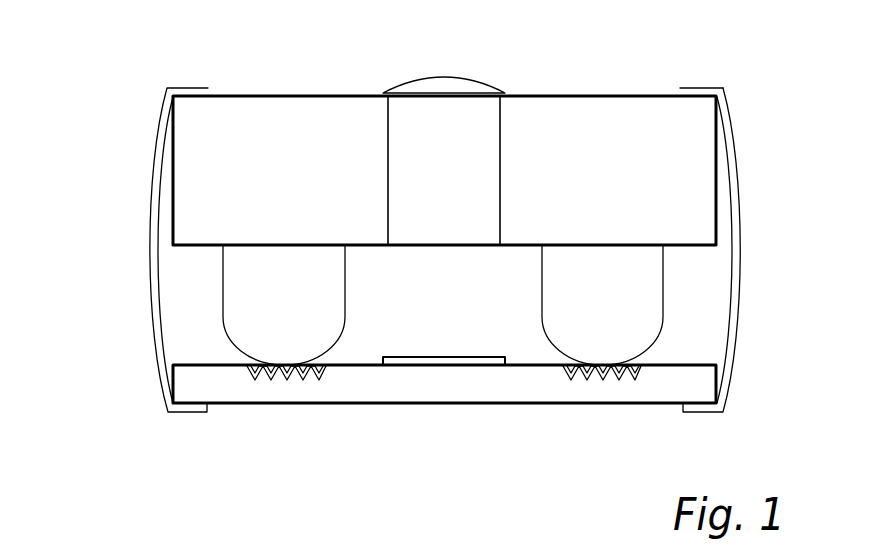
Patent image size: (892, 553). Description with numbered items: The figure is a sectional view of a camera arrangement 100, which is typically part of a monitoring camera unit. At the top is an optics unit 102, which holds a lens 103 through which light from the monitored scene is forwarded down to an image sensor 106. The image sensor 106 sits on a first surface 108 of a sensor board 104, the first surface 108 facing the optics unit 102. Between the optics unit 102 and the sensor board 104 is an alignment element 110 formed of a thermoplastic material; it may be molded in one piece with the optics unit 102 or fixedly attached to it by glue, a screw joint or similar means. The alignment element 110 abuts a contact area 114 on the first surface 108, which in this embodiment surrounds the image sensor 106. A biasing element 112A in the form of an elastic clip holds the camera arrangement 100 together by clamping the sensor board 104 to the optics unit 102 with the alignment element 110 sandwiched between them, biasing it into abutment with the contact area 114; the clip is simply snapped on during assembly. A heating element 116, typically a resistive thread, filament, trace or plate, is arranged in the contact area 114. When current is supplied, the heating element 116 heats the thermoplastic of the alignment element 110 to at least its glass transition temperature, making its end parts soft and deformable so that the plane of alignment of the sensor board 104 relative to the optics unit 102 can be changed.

The camera arrangement 100 is at (141, 106).
The optics unit 102 is at (612, 95).
The lens 103 is at (488, 80).
The sensor board 104 is at (448, 403).
The image sensor 106 is at (447, 357).
The first surface 108 is at (350, 365).
The alignment element 110 is at (306, 300).
The biasing element 112A is at (157, 262).
The contact area 114 is at (297, 380).
The heating element 116 is at (263, 380).